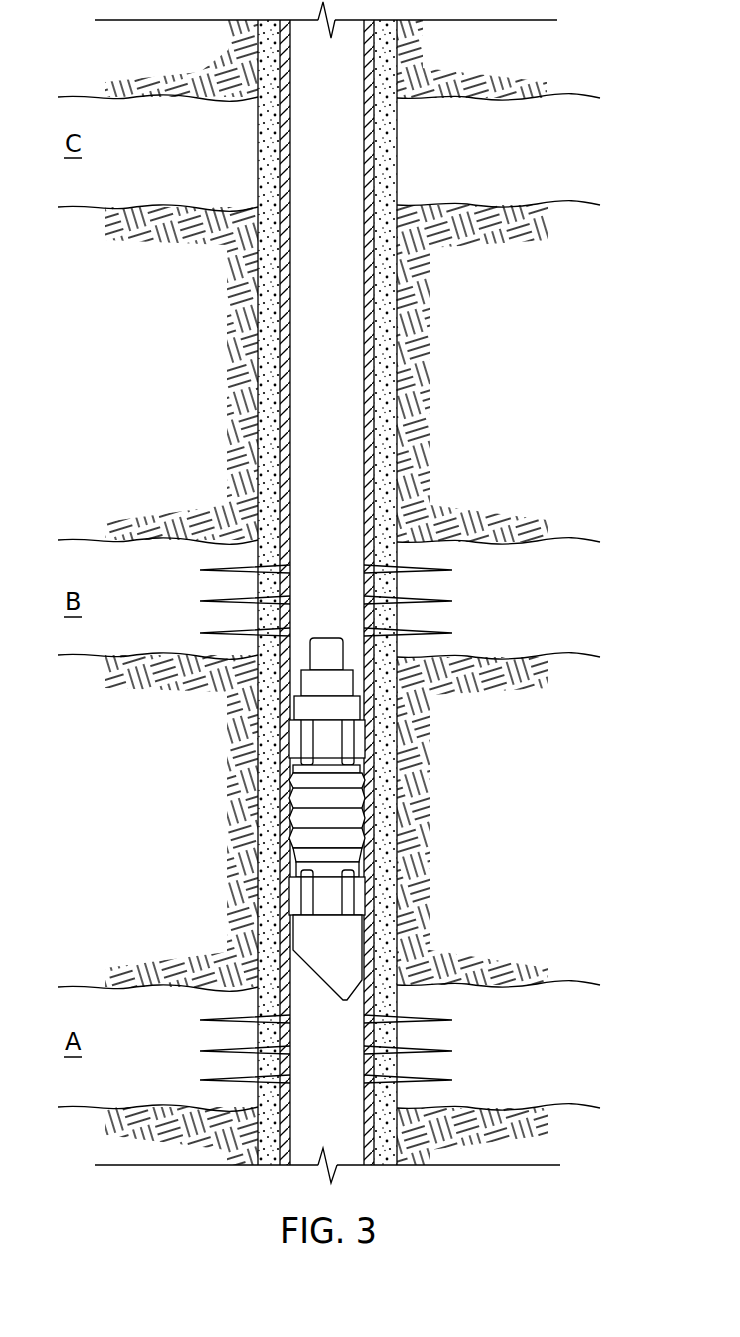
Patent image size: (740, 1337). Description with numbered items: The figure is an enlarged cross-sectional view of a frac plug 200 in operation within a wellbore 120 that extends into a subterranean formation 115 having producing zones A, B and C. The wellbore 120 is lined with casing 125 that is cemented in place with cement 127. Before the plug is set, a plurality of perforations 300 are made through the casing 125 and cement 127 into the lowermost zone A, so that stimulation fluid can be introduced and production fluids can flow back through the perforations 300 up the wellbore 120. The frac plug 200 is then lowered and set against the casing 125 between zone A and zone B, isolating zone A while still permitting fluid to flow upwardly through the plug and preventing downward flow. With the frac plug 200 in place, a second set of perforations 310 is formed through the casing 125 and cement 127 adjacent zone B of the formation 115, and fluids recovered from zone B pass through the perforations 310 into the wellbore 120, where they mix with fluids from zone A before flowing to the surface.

The subterranean formation 115 is at (480, 233).
The wellbore 120 is at (343, 152).
The casing 125 is at (363, 417).
The cement 127 is at (388, 313).
The frac plug 200 is at (338, 818).
The perforations 300 is at (452, 1080).
The second set of perforations 310 is at (452, 633).